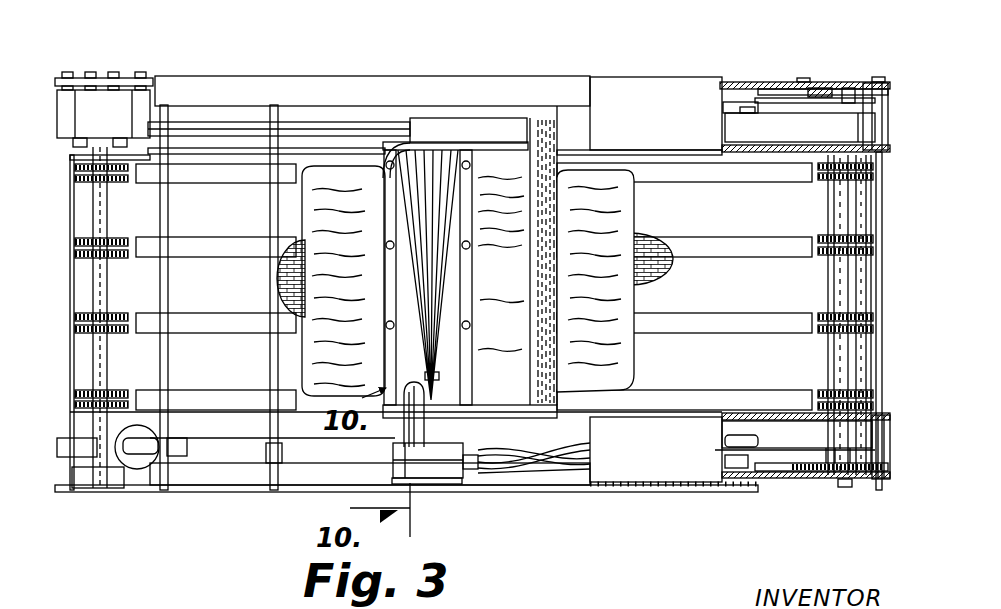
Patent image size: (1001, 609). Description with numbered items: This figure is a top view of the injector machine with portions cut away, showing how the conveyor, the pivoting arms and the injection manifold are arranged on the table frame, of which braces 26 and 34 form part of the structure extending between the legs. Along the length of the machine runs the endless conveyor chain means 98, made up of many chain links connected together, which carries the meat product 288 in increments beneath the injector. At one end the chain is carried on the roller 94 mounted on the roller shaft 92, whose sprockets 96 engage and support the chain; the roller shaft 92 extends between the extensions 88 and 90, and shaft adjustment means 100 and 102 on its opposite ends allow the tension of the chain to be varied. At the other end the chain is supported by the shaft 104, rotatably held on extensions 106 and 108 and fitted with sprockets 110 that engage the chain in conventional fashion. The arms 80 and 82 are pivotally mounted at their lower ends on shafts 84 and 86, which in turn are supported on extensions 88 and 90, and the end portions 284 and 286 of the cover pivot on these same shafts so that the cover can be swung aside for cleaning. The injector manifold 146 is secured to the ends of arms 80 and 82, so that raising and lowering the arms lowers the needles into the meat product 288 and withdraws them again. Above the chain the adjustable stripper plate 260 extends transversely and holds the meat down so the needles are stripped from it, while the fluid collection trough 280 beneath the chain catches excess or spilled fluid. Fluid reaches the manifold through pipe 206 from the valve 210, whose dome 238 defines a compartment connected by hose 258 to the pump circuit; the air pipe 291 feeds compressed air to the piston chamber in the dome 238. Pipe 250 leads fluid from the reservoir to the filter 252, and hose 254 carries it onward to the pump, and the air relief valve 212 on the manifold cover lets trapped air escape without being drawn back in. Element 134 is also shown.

The brace 26 is at (252, 486).
The brace 34 is at (432, 85).
The arm 80 is at (777, 438).
The arm 82 is at (765, 128).
The shaft 84 is at (878, 482).
The shaft 86 is at (876, 77).
The extension 88 is at (822, 482).
The extension 90 is at (848, 85).
The roller shaft 92 is at (843, 490).
The roller 94 is at (858, 205).
The sprockets 96 is at (826, 172).
The conveyor chain means 98 is at (293, 233).
The shaft adjustment means 100 is at (832, 436).
The shaft adjustment means 102 is at (821, 82).
The shaft 104 is at (100, 352).
The extension 106 is at (98, 490).
The extension 108 is at (100, 78).
The sprockets 110 is at (78, 181).
The rod 134 is at (340, 126).
The injector manifold 146 is at (398, 268).
The pipe 206 is at (398, 432).
The valve 210 is at (398, 470).
The air relief valve 212 is at (440, 374).
The dome 238 is at (441, 480).
The pipe 250 is at (65, 458).
The filter 252 is at (140, 470).
The hose 254 is at (182, 458).
The hose 258 is at (540, 455).
The stripper plate 260 is at (392, 126).
The fluid collection trough 280 is at (227, 298).
The end portion 284 is at (660, 482).
The end portion 286 is at (663, 105).
The meat product 288 is at (634, 297).
The air pipe 291 is at (576, 471).